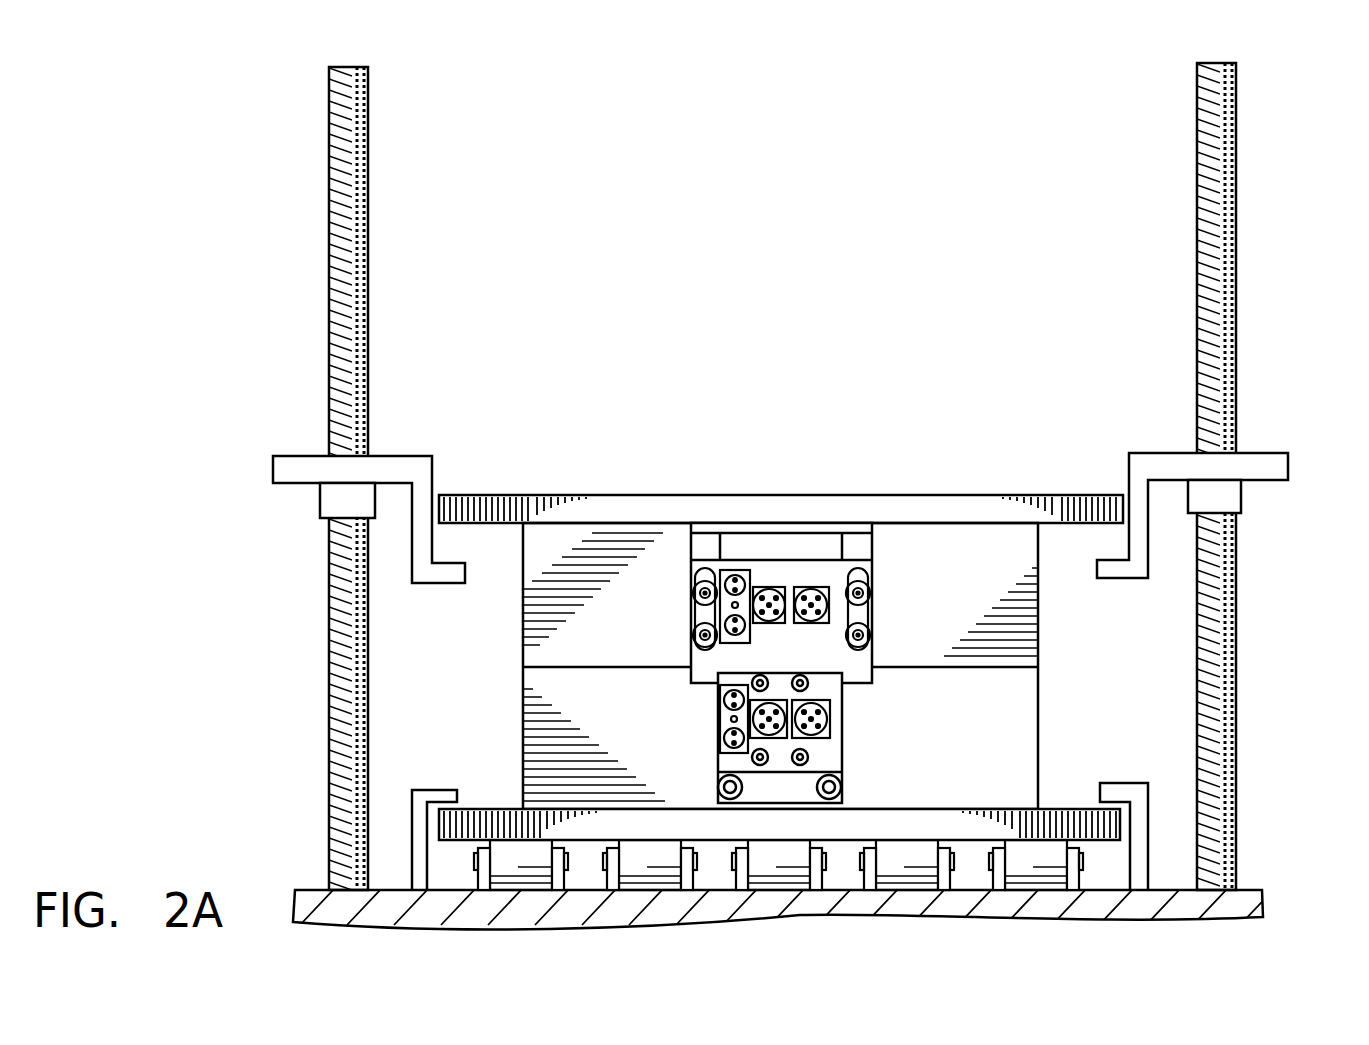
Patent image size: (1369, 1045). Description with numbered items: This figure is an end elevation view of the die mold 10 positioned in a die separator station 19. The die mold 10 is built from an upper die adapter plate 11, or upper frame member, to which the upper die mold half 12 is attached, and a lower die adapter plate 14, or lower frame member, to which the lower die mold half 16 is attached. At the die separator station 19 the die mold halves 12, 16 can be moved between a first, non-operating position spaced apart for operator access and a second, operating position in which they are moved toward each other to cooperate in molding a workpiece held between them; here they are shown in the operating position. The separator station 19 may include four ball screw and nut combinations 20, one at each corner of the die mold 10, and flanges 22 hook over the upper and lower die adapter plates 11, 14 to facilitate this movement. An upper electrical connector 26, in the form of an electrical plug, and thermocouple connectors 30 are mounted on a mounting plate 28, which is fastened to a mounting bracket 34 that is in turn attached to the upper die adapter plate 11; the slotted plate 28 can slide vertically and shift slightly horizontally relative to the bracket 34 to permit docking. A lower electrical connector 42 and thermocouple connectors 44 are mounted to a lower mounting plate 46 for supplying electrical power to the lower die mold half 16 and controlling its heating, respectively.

The die mold 10 is at (755, 475).
The upper die adapter plate 11 is at (942, 495).
The upper die mold half 12 is at (664, 644).
The lower die adapter plate 14 is at (900, 809).
The lower die mold half 16 is at (977, 738).
The die separator station 19 is at (1252, 236).
The ball screw and nut combination 20 is at (375, 448).
The flange 22 is at (432, 584).
The upper electrical connector 26 is at (800, 623).
The mounting plate 28 is at (873, 612).
The thermocouple connector 30 is at (700, 572).
The mounting bracket 34 is at (862, 547).
The lower electrical connector 42 is at (832, 708).
The thermocouple connector 44 is at (720, 711).
The lower mounting plate 46 is at (832, 749).